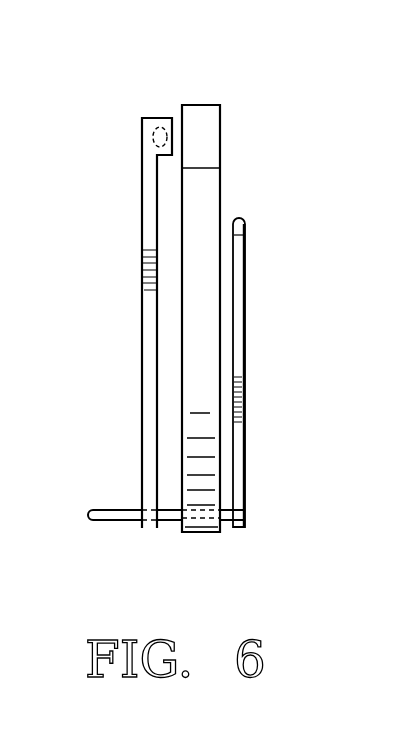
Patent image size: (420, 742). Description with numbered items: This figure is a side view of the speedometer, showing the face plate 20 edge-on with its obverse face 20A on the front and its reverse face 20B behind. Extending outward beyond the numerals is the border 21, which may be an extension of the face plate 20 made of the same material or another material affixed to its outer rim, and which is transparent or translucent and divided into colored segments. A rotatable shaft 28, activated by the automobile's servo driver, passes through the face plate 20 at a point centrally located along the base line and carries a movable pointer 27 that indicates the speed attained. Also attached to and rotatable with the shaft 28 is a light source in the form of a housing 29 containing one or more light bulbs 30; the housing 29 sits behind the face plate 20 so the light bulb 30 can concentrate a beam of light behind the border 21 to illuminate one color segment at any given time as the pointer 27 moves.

The face plate 20 is at (221, 190).
The border 21 is at (205, 133).
The obverse face 20A is at (220, 498).
The reverse face 20B is at (178, 497).
The movable pointer 27 is at (240, 365).
The rotatable shaft 28 is at (108, 510).
The housing 29 is at (148, 146).
The light bulb 30 is at (163, 124).